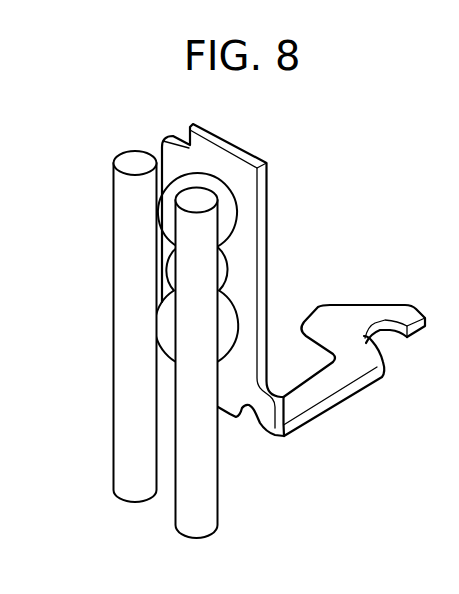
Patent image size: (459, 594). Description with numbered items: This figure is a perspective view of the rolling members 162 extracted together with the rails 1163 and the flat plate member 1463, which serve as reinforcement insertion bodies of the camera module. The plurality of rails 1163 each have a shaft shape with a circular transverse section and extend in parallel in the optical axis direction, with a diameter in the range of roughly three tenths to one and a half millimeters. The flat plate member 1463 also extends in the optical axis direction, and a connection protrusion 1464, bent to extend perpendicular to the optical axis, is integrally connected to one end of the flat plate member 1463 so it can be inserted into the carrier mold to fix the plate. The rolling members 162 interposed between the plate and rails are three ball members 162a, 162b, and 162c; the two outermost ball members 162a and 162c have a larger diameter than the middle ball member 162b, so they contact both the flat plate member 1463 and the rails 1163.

The rails 1163 is at (192, 345).
The flat plate member 1463 is at (258, 161).
The connection protrusion 1464 is at (315, 396).
The rolling members 162 is at (285, 270).
The ball member 162a is at (224, 216).
The ball member 162b is at (222, 273).
The ball member 162c is at (225, 322).